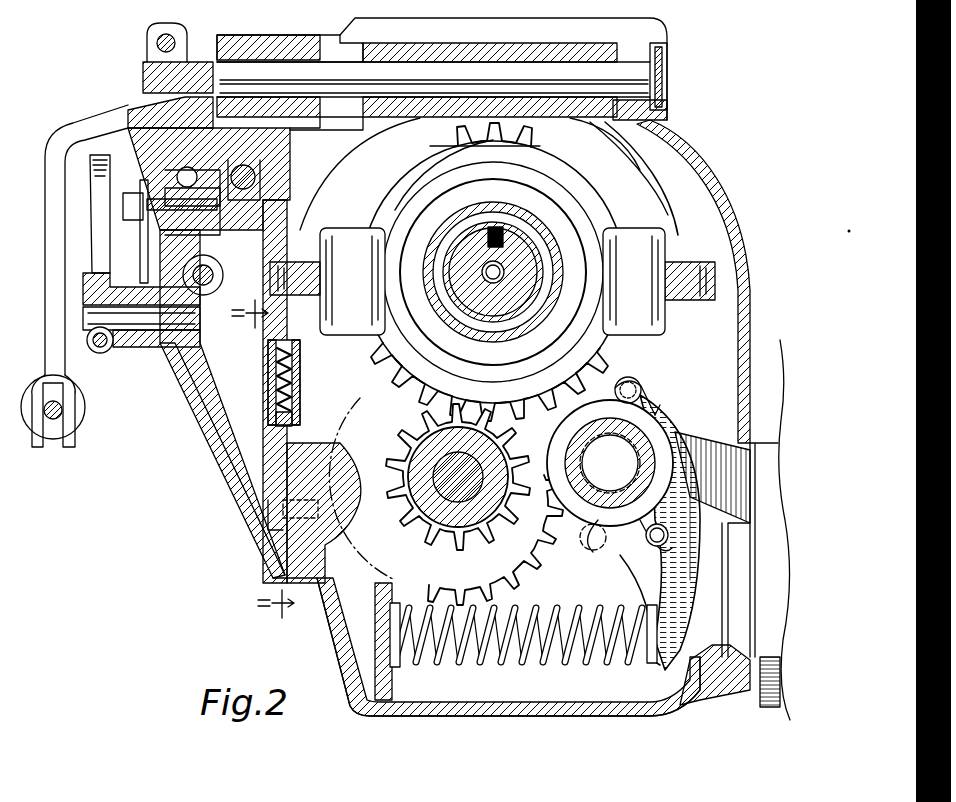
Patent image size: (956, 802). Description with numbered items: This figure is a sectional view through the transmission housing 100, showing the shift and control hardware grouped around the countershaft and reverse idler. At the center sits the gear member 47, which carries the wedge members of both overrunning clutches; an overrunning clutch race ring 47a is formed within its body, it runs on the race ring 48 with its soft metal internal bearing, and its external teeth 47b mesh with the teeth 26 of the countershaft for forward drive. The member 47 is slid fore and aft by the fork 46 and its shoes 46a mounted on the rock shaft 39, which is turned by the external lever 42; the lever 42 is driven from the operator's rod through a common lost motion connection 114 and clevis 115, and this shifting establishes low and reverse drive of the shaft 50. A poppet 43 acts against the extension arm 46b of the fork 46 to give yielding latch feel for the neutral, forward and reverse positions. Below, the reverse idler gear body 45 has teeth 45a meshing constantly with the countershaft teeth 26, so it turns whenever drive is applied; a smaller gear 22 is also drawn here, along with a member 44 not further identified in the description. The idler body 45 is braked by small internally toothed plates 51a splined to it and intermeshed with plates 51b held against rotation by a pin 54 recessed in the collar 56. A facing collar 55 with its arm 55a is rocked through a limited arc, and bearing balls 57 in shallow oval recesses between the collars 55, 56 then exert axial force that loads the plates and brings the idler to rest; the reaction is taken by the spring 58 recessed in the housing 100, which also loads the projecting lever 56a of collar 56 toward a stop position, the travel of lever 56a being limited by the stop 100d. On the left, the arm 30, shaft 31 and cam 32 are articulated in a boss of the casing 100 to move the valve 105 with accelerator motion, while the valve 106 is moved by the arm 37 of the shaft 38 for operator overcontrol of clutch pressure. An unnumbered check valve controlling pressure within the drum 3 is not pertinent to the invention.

The drum 3 is at (263, 467).
The gear 22 is at (468, 540).
The countershaft teeth 26 is at (412, 495).
The external arm 30 is at (95, 240).
The shaft 31 is at (155, 325).
The cam 32 is at (210, 268).
The arm 37 is at (215, 210).
The shaft 38 is at (168, 205).
The rock shaft 39 is at (640, 76).
The lever 42 is at (48, 235).
The poppet 43 is at (280, 422).
The cam plate 44 is at (620, 455).
The reverse idler gear body 45 is at (650, 470).
The idler teeth 45a is at (660, 408).
The fork 46 is at (618, 160).
The shoes 46a is at (352, 318).
The extension arm of fork 46b is at (272, 342).
The gear member 47 is at (400, 335).
The overrunning clutch race ring 47a is at (396, 210).
The external teeth 47b is at (450, 138).
The race ring 48 is at (520, 215).
The shaft 50 is at (555, 272).
The small plates 51a is at (603, 548).
The plates 51b is at (640, 398).
The pin 54 is at (665, 545).
The collar 55 is at (690, 440).
The arm of collar 55a is at (730, 497).
The collar 56 is at (617, 565).
The projecting lever 56a is at (660, 662).
The bearing balls 57 is at (628, 378).
The spring 58 is at (468, 655).
The housing 100 is at (312, 445).
The stop 100d is at (700, 668).
The valve 105 is at (212, 278).
The valve 106 is at (248, 190).
The lost motion connection 114 is at (80, 410).
The clevis 115 is at (62, 414).